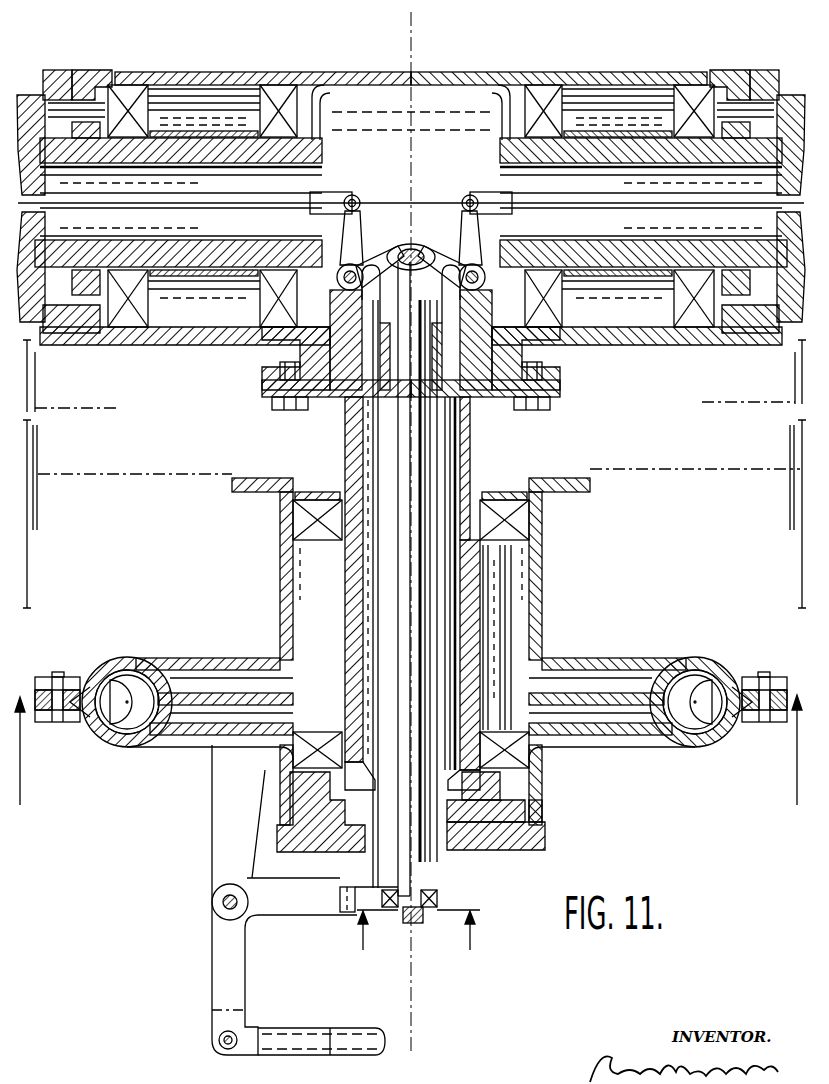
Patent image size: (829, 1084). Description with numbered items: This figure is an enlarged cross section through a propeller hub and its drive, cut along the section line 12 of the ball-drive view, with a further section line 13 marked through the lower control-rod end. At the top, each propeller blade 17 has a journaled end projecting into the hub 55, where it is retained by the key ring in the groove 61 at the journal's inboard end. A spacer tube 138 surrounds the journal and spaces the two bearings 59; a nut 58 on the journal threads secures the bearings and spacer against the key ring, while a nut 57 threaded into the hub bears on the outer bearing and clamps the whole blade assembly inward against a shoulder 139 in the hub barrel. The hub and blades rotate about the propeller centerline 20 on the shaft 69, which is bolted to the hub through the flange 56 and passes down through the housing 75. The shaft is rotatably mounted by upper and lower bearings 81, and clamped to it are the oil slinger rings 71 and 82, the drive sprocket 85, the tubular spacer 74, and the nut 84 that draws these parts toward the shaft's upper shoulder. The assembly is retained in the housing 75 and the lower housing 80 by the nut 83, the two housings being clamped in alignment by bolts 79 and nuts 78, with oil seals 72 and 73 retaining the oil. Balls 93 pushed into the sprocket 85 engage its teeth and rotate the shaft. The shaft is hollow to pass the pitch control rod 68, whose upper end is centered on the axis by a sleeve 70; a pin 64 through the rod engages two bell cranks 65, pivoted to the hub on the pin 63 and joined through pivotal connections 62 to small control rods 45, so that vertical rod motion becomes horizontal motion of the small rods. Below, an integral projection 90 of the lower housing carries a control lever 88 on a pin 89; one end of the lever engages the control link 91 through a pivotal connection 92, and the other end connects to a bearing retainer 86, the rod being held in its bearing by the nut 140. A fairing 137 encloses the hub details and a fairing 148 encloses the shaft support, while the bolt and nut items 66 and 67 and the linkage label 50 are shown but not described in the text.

The section line 12— 12 is at (406, 764).
The section line 13— 13 is at (415, 948).
The propeller blade 17 is at (33, 93).
The propeller centerline 20 is at (411, 62).
The small control rod 45 is at (270, 206).
The linkage 50 is at (414, 194).
The hub 55 is at (470, 72).
The flange 56 is at (560, 374).
The nut 57 is at (60, 68).
The nut 58 is at (118, 72).
The bearing 59 is at (128, 85).
The groove key ring 61 is at (318, 162).
The pivotal connection 62 is at (360, 197).
The pin 63 is at (356, 264).
The pin 64 is at (440, 236).
The bell crank 65 is at (352, 230).
The bolt 66 is at (276, 364).
The nut 67 is at (288, 412).
The control rod 68 is at (400, 438).
The shaft 69 is at (472, 420).
The sleeve 70 is at (382, 314).
The oil slinger ring 71 is at (520, 486).
The oil seal 72 is at (495, 492).
The oil seal 73 is at (478, 854).
The tubular spacer 74 is at (482, 608).
The housing 75 is at (590, 486).
The nut 78 is at (56, 672).
The bolt 79 is at (55, 722).
The lower housing 80 is at (180, 748).
The bearing 81 is at (308, 548).
The oil slinger ring 82 is at (540, 776).
The nut 83 is at (548, 832).
The nut 84 is at (300, 854).
The drive sprocket 85 is at (214, 678).
The bearing retainer 86 is at (440, 898).
The control lever 88 is at (283, 905).
The pin 89 is at (212, 902).
The integral projection 90 is at (212, 834).
The control link 91 is at (304, 1036).
The pivotal connection 92 is at (228, 1052).
The ball 93 is at (138, 660).
The fairing 137 is at (34, 354).
The spacer tube 138 is at (216, 130).
The shoulder 139 is at (322, 108).
The nut 140 is at (418, 924).
The fairing 148 is at (33, 560).